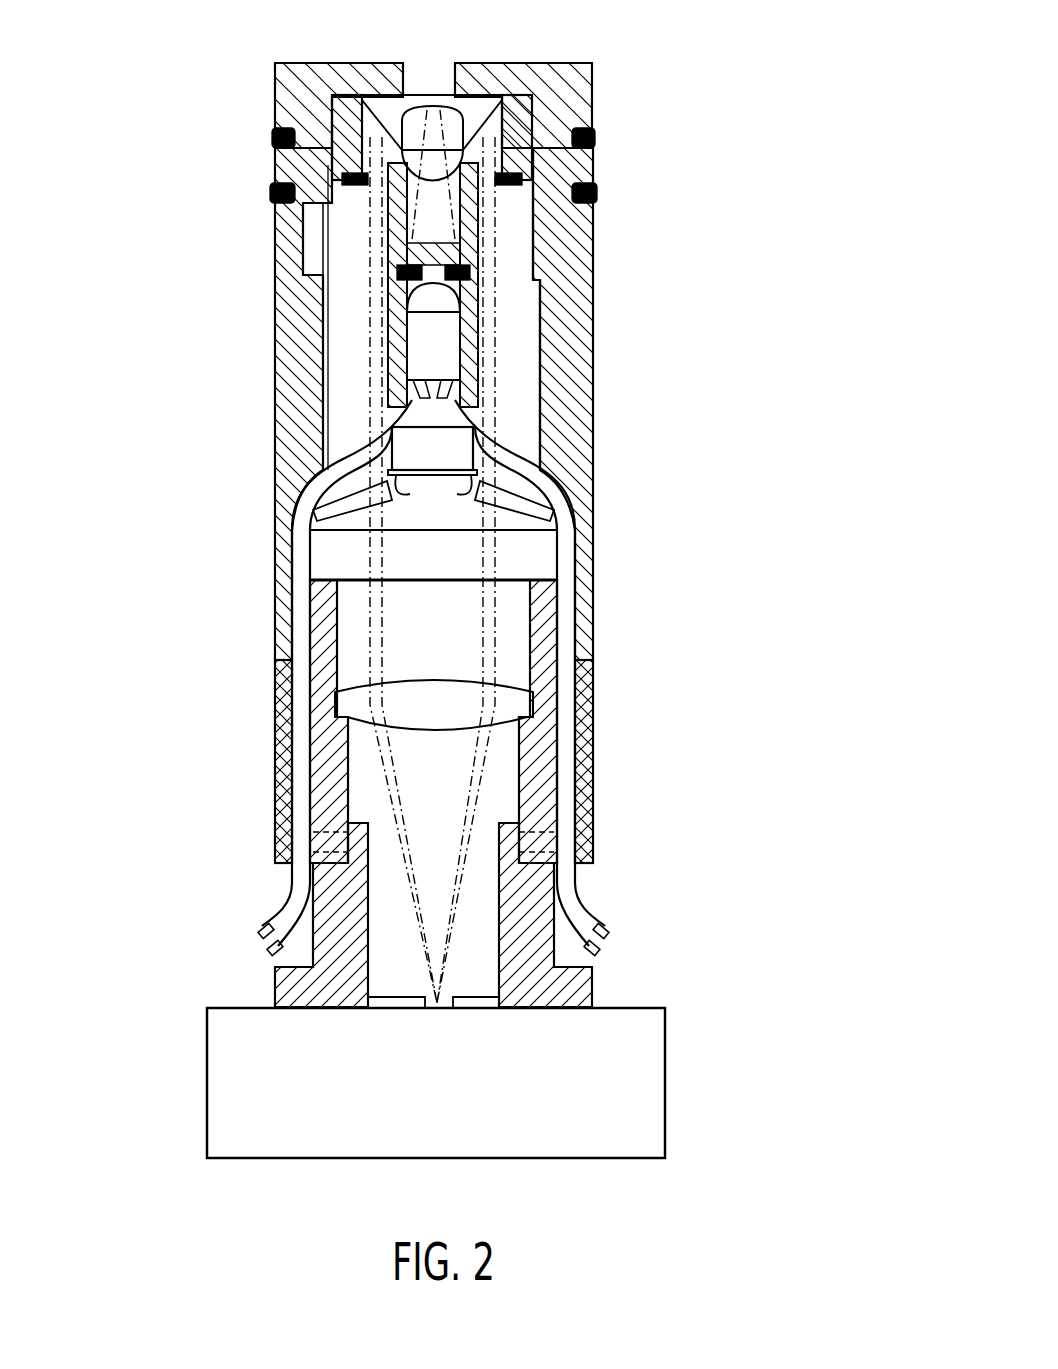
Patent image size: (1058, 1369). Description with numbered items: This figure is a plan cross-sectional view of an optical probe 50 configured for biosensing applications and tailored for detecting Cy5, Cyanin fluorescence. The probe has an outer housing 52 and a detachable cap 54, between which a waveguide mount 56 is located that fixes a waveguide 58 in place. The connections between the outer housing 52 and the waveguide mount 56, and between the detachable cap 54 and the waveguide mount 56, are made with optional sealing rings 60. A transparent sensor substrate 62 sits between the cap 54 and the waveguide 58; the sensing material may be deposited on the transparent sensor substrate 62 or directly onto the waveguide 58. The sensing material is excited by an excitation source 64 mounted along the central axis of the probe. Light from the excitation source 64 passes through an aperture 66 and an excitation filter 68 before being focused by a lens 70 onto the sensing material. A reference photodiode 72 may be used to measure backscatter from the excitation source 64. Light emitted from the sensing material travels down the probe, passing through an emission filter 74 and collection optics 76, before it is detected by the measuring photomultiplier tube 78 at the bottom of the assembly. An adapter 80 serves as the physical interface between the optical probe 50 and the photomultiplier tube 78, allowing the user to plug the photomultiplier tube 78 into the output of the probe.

The optical probe 50 is at (657, 498).
The outer housing 52 is at (310, 325).
The detachable cap 54 is at (318, 75).
The waveguide mount 56 is at (320, 158).
The waveguide 58 is at (497, 123).
The sealing rings 60 is at (270, 138).
The transparent sensor substrate 62 is at (498, 78).
The excitation source 64 is at (425, 357).
The aperture 66 is at (470, 268).
The excitation filter 68 is at (585, 320).
The lens 70 is at (458, 160).
The reference photodiode 72 is at (408, 453).
The emission filter 74 is at (527, 548).
The collection optics 76 is at (452, 705).
The measuring photomultiplier tube 78 is at (608, 1090).
The adapter 80 is at (533, 987).